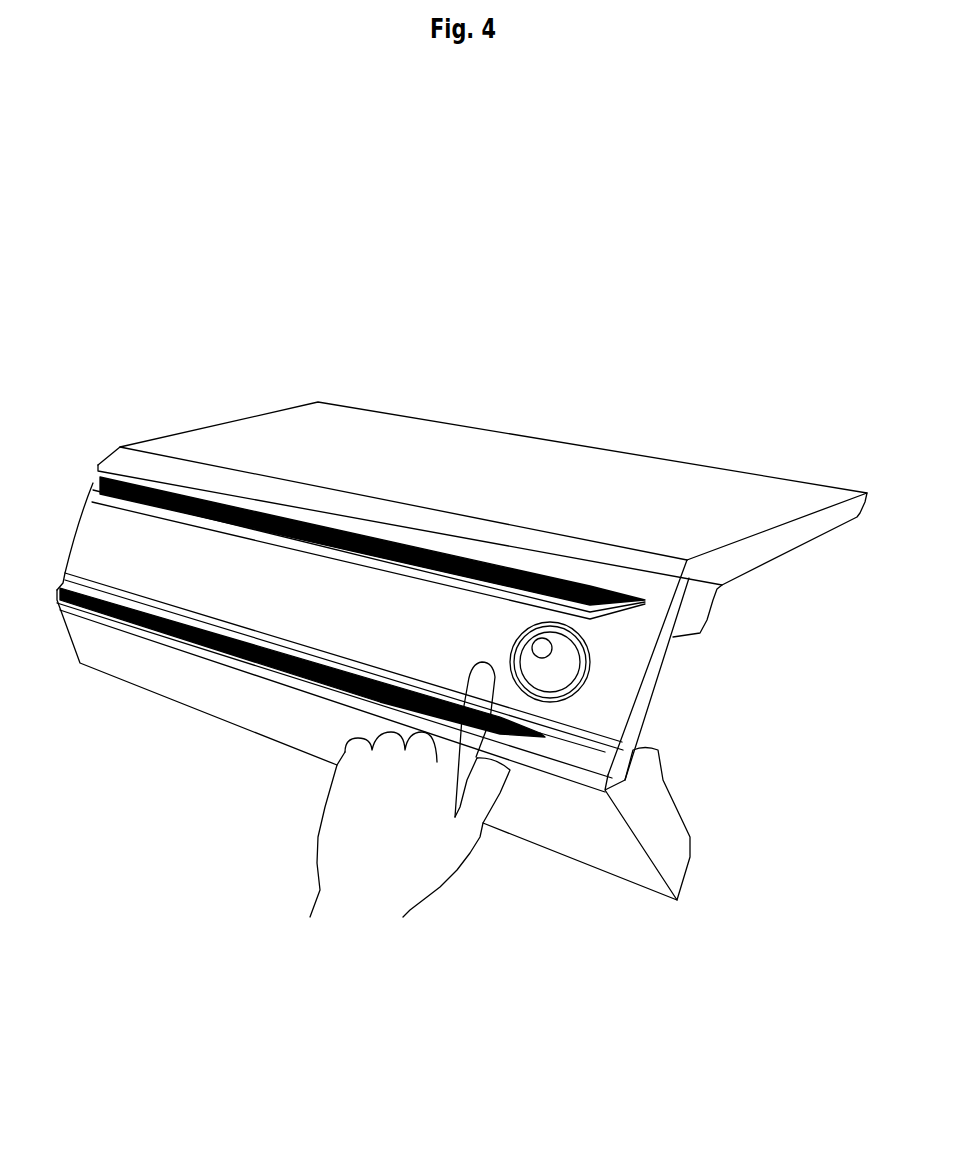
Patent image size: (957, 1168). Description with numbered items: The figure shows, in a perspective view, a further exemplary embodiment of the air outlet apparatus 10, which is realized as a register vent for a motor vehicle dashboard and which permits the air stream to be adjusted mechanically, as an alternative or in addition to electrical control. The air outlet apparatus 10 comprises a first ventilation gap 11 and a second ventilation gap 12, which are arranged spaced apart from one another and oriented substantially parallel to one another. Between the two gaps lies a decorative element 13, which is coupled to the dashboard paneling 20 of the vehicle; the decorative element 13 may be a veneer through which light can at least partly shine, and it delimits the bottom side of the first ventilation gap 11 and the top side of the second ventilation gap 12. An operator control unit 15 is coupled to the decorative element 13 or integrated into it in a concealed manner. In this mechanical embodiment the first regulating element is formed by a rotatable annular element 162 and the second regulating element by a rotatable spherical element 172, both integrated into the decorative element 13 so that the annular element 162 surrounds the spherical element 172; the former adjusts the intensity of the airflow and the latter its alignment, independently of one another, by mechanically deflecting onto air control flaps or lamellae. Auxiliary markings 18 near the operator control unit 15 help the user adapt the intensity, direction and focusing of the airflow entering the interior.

The air outlet apparatus 10 is at (728, 318).
The first ventilation gap 11 is at (293, 518).
The second ventilation gap 12 is at (143, 617).
The decorative element 13 is at (423, 620).
The operator control unit 15 is at (604, 633).
The auxiliary markings 18 is at (545, 640).
The dashboard paneling 20 is at (373, 437).
The rotatable annular element 162 is at (588, 655).
The rotatable spherical element 172 is at (550, 673).